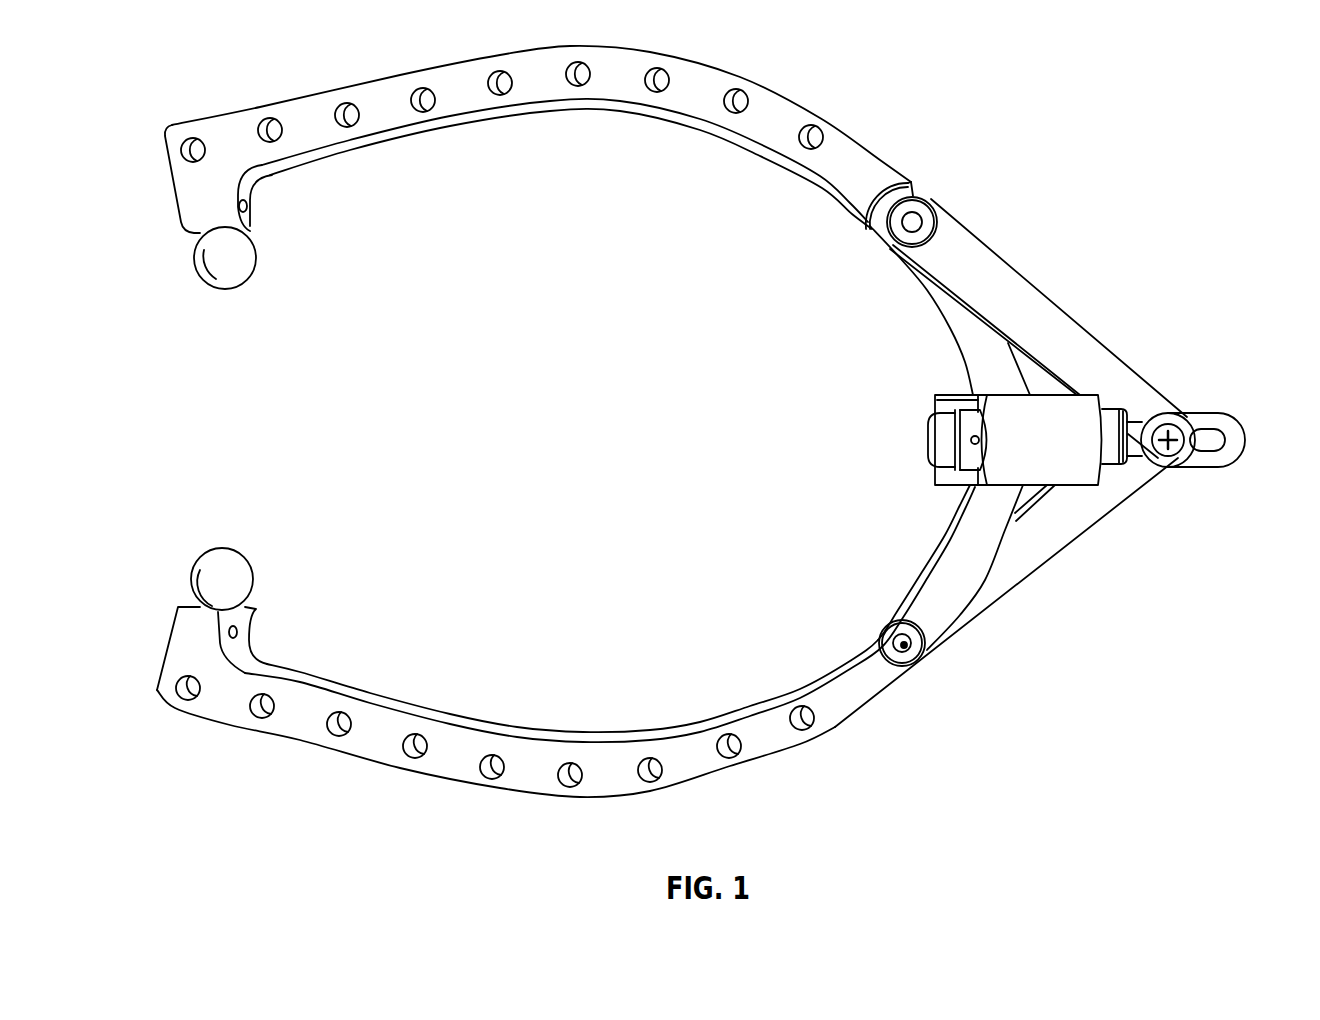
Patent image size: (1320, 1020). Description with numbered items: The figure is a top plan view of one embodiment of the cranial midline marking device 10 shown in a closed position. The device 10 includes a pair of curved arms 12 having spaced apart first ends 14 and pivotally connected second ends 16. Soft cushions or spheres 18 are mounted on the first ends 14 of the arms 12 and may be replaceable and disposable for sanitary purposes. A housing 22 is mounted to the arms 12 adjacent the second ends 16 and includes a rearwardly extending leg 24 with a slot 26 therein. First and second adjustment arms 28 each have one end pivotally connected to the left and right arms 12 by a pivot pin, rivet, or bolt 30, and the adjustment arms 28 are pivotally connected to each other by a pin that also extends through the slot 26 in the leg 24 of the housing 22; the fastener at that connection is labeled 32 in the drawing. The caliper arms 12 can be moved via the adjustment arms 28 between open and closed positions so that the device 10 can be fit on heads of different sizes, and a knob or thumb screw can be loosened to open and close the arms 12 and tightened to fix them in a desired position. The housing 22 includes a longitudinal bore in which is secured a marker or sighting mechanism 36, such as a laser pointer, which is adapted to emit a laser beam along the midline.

The cranial midline marking device 10 is at (510, 815).
The curved arms 12 is at (633, 97).
The first ends 14 is at (193, 183).
The second ends 16 is at (963, 343).
The soft cushions or spheres 18 is at (205, 265).
The housing 22 is at (1048, 418).
The rearwardly extending leg 24 is at (1210, 457).
The slot 26 is at (1222, 432).
The adjustment arms 28 is at (1000, 280).
The pivot pin, rivet, or bolt 30 is at (912, 222).
The screw 32 is at (1177, 427).
The marker or sighting mechanism 36 is at (937, 422).